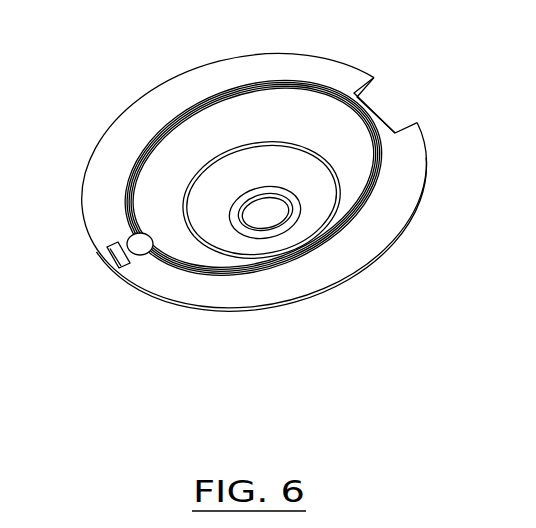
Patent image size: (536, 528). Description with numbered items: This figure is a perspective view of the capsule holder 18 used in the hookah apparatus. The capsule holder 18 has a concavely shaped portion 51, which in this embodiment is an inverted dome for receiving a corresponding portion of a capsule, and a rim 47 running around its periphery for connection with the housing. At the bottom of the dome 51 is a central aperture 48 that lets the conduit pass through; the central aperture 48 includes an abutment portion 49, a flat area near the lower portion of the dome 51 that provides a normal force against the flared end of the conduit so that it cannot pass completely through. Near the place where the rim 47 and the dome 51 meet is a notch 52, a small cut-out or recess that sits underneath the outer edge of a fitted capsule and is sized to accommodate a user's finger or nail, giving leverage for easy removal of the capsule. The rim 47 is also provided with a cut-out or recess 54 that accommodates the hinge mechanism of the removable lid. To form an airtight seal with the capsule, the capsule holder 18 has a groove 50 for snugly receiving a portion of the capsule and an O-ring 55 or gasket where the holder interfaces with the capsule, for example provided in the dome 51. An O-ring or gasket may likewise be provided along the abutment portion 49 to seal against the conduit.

The capsule holder 18 is at (150, 314).
The rim 47 is at (145, 118).
The central aperture 48 is at (266, 216).
The abutment portion 49 is at (247, 193).
The groove 50 is at (132, 173).
The concavely shaped portion 51 is at (347, 193).
The notch 52 is at (127, 238).
The cut-out or recess 54 is at (403, 124).
The O-ring 55 is at (280, 141).